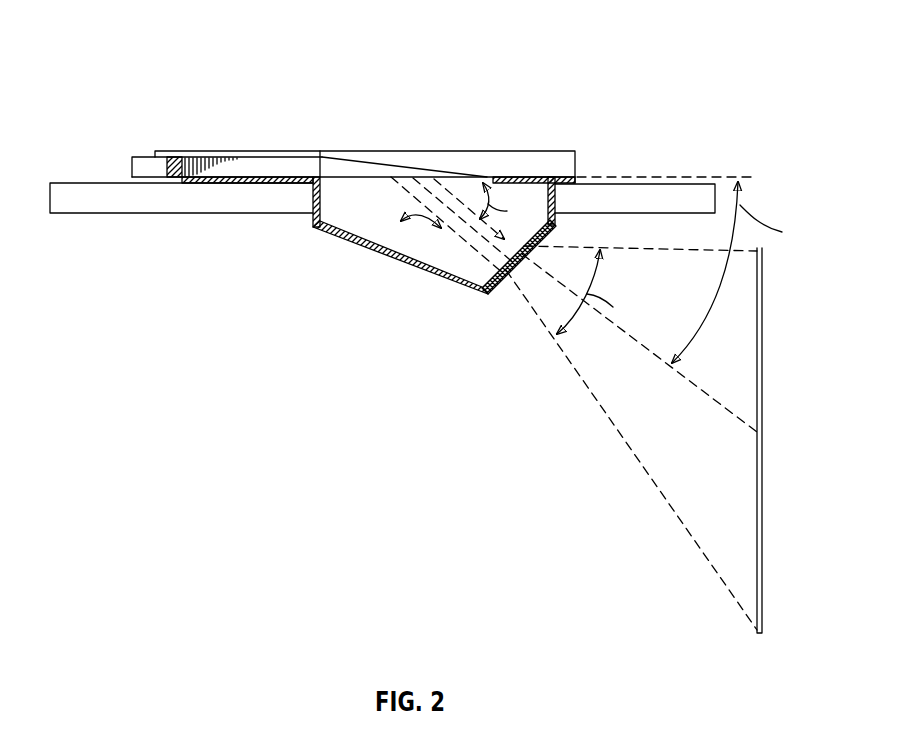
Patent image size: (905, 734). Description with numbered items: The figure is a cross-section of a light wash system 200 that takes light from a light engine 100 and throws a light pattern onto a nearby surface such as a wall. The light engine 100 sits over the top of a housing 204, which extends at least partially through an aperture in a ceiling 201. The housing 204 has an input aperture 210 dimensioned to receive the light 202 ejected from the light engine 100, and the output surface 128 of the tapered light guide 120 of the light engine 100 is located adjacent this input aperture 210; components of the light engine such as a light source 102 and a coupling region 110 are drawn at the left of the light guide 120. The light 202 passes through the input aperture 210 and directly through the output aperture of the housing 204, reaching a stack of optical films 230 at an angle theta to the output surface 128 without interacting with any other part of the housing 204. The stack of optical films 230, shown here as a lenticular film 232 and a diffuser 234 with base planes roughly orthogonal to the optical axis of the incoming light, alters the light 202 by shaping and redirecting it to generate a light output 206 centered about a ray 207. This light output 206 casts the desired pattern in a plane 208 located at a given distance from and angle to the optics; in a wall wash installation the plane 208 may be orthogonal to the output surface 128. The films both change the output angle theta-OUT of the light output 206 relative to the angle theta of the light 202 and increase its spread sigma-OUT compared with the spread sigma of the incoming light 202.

The light wash system 200 is at (150, 60).
The light engine 100 is at (272, 150).
The light source 102 is at (170, 158).
The waveguide 110 is at (225, 158).
The tapered light guide 120 is at (343, 160).
The output surface 128 is at (378, 178).
The ceiling 201 is at (130, 207).
The light 202 is at (442, 190).
The housing 204 is at (411, 273).
The light output 206 is at (640, 474).
The ray 207 is at (720, 408).
The plane 208 is at (757, 455).
The input aperture 210 is at (353, 181).
The stack of optical films 230 is at (503, 291).
The lenticular film 232 is at (483, 287).
The diffuser 234 is at (486, 289).